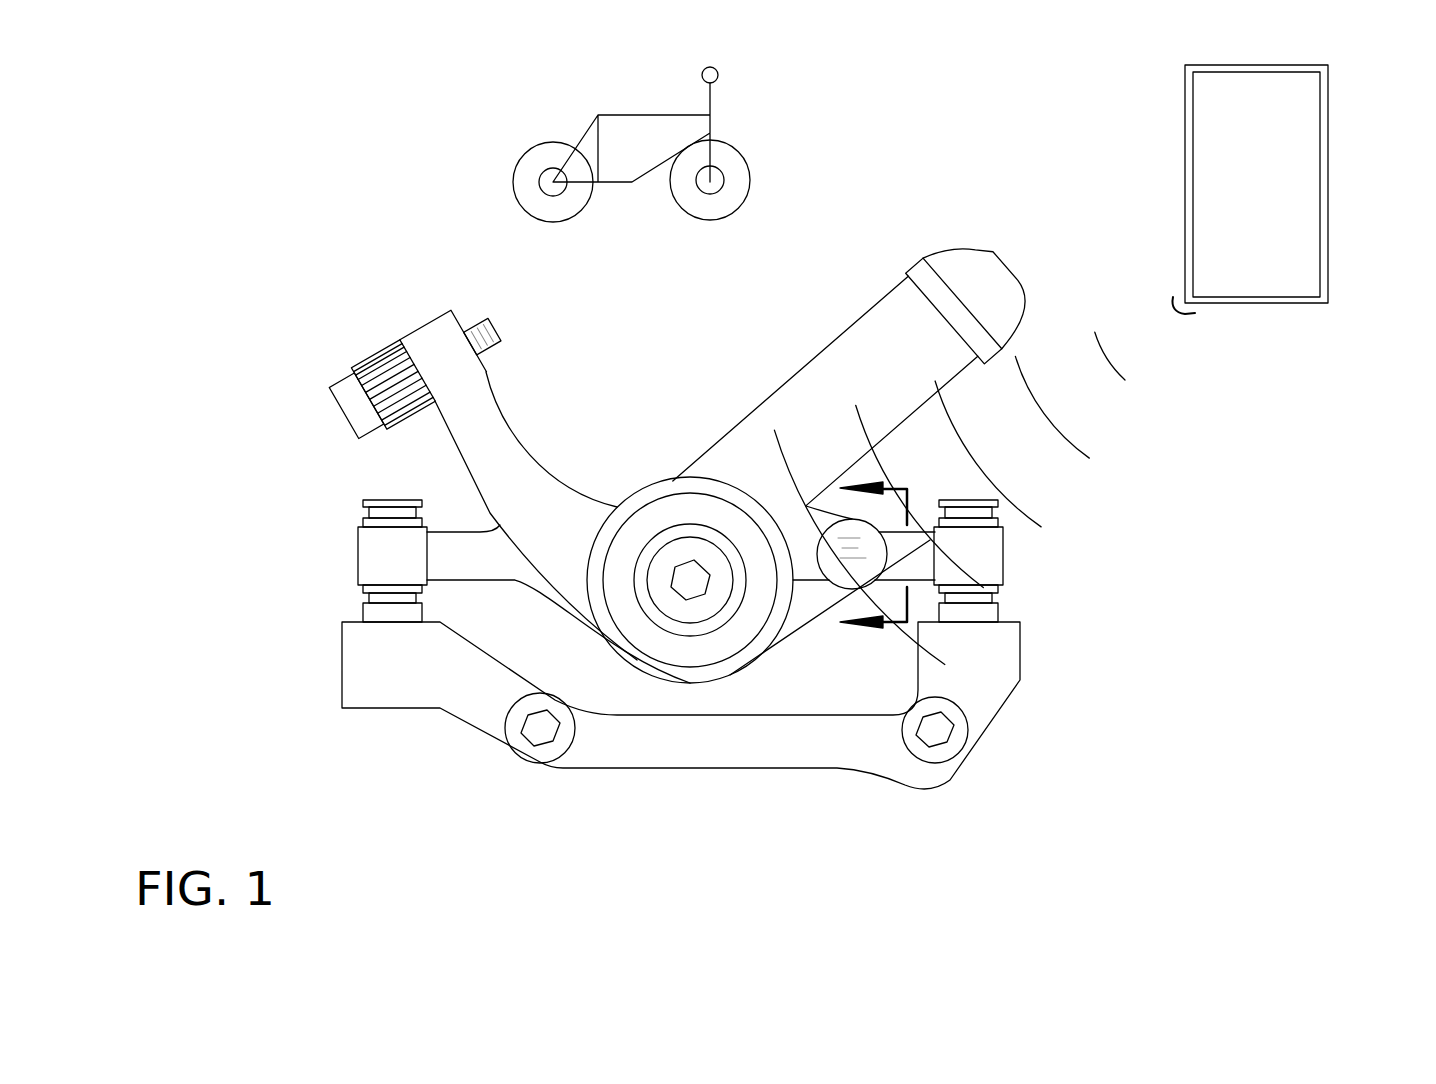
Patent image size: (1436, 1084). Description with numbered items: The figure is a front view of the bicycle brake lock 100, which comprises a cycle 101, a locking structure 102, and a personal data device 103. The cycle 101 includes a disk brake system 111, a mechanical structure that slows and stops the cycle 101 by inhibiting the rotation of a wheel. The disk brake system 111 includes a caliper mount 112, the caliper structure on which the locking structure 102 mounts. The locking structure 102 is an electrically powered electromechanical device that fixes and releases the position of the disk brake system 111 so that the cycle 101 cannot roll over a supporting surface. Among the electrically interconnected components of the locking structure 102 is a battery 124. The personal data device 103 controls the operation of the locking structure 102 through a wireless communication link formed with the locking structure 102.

The bicycle brake lock 100 is at (266, 163).
The cycle 101 is at (661, 141).
The locking structure 102 is at (877, 552).
The personal data device 103 is at (1293, 207).
The disk brake system 111 is at (543, 168).
The caliper mount 112 is at (360, 330).
The battery 124 is at (1130, 380).